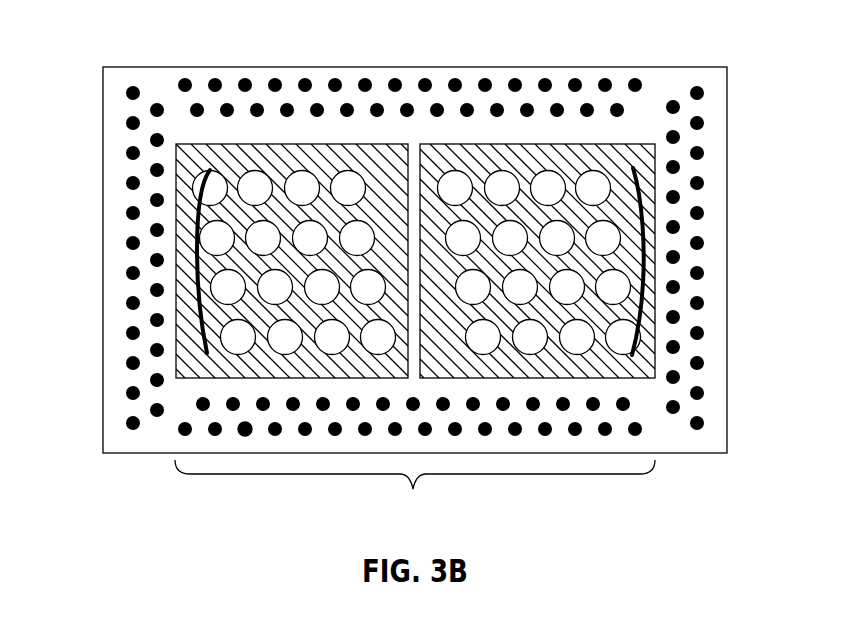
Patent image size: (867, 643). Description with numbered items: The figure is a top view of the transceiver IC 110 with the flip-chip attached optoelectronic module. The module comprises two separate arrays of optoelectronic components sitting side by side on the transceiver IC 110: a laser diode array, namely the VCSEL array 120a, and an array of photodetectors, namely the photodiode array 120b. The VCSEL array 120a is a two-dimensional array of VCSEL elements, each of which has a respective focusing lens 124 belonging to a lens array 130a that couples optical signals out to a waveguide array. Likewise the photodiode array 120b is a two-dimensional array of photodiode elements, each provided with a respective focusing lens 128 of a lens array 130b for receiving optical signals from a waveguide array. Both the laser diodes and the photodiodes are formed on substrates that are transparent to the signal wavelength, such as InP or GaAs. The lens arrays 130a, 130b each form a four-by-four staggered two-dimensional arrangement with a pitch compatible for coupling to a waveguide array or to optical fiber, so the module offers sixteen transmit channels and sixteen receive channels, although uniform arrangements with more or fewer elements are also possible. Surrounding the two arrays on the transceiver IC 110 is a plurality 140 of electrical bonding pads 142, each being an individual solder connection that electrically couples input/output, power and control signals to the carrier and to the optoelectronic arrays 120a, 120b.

The transceiver IC 110 is at (727, 118).
The VCSEL array 120a is at (225, 262).
The photodiode array 120b is at (597, 270).
The focusing lens 124 is at (288, 343).
The focusing lens 128 is at (532, 340).
The lens array 130a is at (197, 260).
The lens array 130b is at (644, 262).
The plurality of electrical bonding pads 140 is at (415, 490).
The electrical bonding pad 142 is at (244, 437).